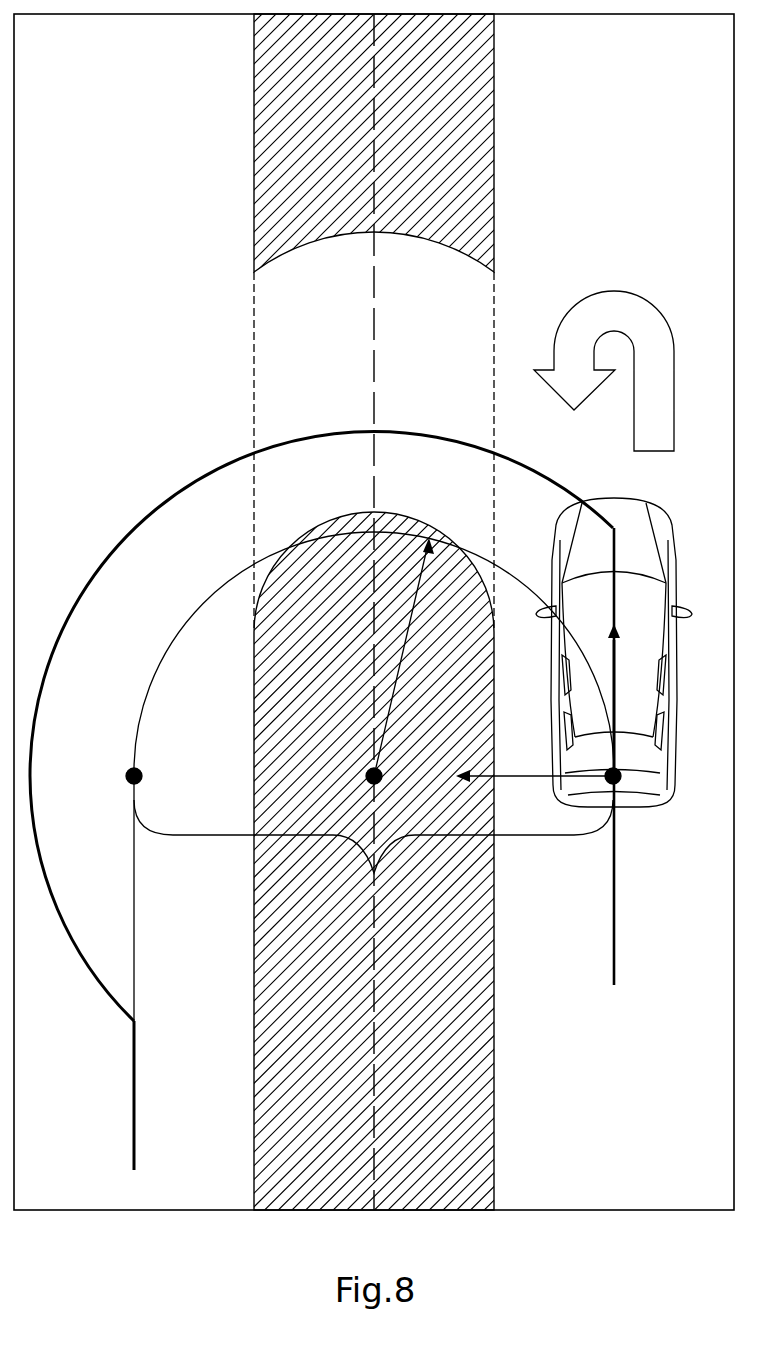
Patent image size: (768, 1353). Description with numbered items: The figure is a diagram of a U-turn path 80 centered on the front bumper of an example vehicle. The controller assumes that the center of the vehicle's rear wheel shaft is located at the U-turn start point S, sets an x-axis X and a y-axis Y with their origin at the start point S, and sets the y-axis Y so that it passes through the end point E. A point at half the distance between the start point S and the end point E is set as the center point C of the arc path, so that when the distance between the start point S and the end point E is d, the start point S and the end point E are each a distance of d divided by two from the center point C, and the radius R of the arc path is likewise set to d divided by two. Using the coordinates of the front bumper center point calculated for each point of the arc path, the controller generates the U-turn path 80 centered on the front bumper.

The U-turn path 80 is at (429, 412).
The start point S is at (603, 756).
The end point E is at (143, 956).
The center point C is at (365, 784).
The radius R is at (404, 657).
The distance d is at (373, 849).
The x-axis X is at (606, 693).
The y-axis Y is at (534, 761).